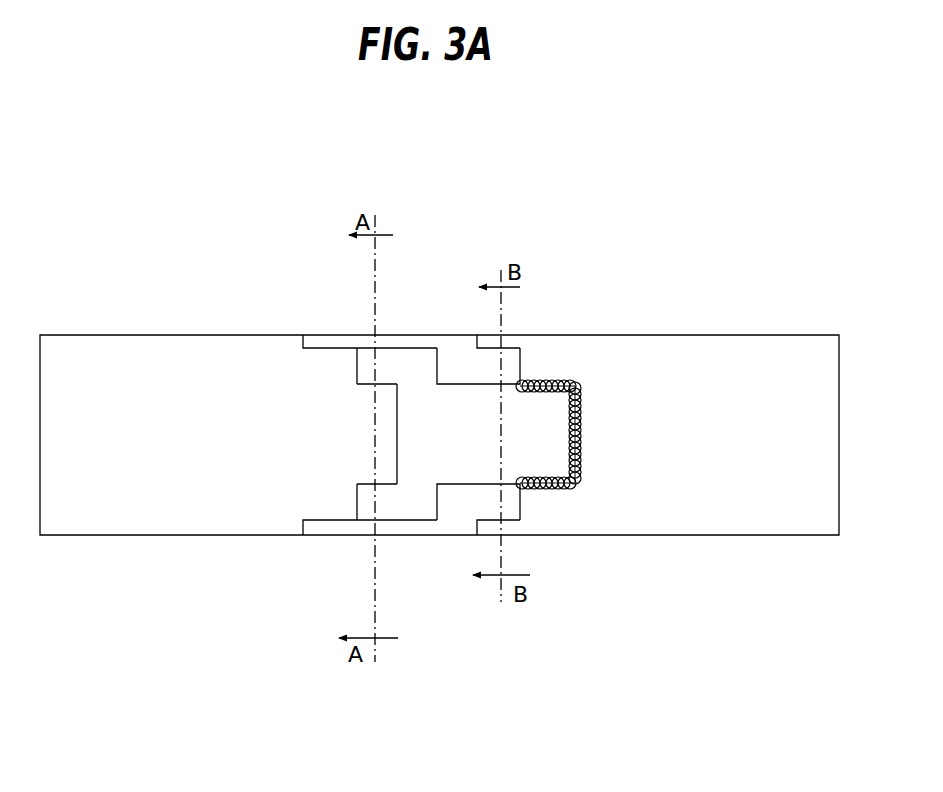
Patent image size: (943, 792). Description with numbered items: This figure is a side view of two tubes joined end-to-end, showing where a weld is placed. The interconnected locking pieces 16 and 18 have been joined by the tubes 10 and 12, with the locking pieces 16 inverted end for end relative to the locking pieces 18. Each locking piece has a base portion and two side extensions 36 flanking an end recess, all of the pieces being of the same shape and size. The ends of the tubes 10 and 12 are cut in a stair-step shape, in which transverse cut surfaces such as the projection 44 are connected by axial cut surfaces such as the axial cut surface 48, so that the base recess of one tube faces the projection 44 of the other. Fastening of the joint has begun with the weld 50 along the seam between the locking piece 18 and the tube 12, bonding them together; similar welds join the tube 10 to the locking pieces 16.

The tube 10 is at (118, 515).
The tube 12 is at (779, 510).
The locking piece 16 is at (446, 345).
The locking piece 18 is at (468, 418).
The side extension 36 is at (370, 360).
The projection 44 is at (388, 433).
The axial cut surface 48 is at (380, 385).
The weld 50 is at (583, 383).